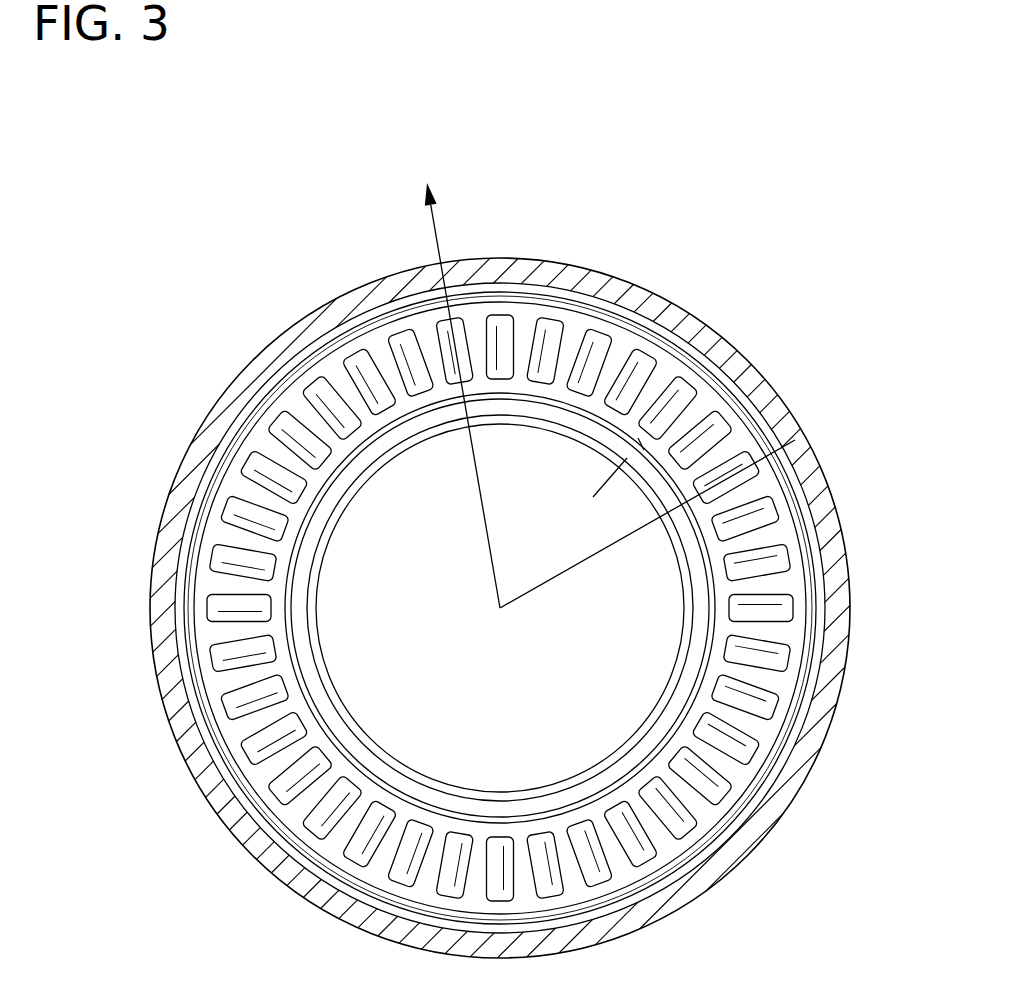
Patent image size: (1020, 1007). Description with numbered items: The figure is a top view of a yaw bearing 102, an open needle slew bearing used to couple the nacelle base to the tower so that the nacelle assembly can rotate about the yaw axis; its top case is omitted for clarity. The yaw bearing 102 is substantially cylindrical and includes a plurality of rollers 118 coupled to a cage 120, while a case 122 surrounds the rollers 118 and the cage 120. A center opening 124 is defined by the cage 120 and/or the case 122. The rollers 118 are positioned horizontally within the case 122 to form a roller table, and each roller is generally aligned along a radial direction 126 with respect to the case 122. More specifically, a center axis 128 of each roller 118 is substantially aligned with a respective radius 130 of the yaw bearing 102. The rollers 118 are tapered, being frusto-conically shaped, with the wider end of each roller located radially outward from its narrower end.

The yaw bearing 102 is at (240, 224).
The rollers 118 is at (765, 712).
The cage 120 is at (797, 636).
The case 122 is at (817, 477).
The center opening 124 is at (368, 698).
The radial direction 126 is at (487, 525).
The center axis 128 is at (740, 323).
The radius 130 is at (552, 582).